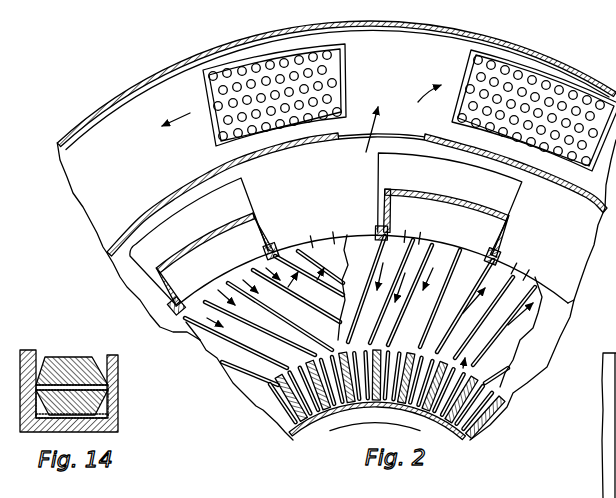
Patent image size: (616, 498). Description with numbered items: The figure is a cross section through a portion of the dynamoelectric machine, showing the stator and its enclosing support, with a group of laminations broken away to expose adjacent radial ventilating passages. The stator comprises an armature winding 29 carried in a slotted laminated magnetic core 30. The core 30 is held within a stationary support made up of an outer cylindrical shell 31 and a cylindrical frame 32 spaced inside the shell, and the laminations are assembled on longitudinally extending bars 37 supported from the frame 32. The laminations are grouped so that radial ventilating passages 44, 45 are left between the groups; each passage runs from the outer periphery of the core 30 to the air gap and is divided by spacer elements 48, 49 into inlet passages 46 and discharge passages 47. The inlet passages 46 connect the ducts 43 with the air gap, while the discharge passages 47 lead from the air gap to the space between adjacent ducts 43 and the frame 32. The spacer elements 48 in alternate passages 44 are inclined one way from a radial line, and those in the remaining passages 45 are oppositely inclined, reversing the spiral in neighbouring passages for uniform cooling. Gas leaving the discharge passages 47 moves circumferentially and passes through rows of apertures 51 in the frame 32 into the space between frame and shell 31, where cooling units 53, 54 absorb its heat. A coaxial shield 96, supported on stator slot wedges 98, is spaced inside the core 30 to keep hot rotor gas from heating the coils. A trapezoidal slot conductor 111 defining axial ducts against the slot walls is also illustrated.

In FIG. 2, the armature winding 29 is at (490, 420).
In FIG. 2, the slotted laminated magnetic core 30 is at (537, 286).
In FIG. 2, the cylindrical shell 31 is at (117, 100).
In FIG. 2, the cylindrical frame 32 is at (183, 186).
In FIG. 2, the longitudinally extending bars 37 is at (276, 245).
In FIG. 2, the ducts 43 is at (227, 233).
In FIG. 2, the radial ventilating passage 44 is at (535, 374).
In FIG. 2, the radial ventilating passage 45 is at (211, 383).
In FIG. 2, the inlet passages 46 is at (219, 290).
In FIG. 2, the discharge passages 47 is at (298, 243).
In FIG. 2, the spacer elements 48 is at (196, 343).
In FIG. 2, the spacer elements 49 is at (467, 362).
In FIG. 2, the apertures 51 is at (407, 134).
In FIG. 2, the cooling unit 53 is at (343, 70).
In FIG. 2, the cooling unit 54 is at (471, 78).
In FIG. 2, the coaxial shield 96 is at (413, 418).
In FIG. 2, the stator slot wedges 98 is at (365, 412).
In FIG. 14, the conductors 111 is at (71, 360).